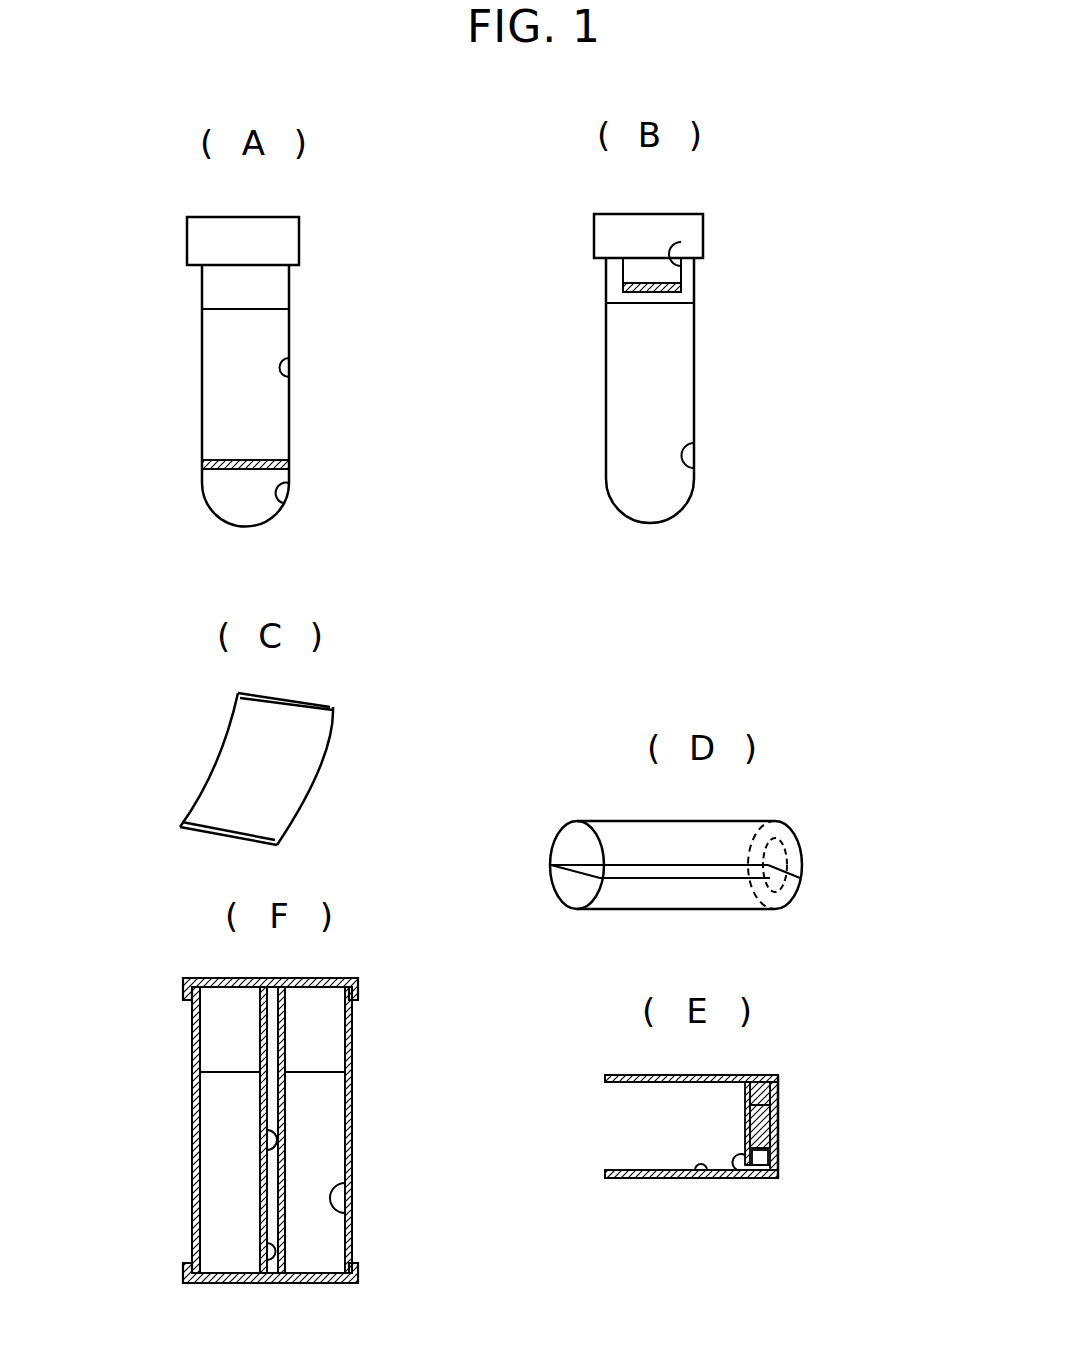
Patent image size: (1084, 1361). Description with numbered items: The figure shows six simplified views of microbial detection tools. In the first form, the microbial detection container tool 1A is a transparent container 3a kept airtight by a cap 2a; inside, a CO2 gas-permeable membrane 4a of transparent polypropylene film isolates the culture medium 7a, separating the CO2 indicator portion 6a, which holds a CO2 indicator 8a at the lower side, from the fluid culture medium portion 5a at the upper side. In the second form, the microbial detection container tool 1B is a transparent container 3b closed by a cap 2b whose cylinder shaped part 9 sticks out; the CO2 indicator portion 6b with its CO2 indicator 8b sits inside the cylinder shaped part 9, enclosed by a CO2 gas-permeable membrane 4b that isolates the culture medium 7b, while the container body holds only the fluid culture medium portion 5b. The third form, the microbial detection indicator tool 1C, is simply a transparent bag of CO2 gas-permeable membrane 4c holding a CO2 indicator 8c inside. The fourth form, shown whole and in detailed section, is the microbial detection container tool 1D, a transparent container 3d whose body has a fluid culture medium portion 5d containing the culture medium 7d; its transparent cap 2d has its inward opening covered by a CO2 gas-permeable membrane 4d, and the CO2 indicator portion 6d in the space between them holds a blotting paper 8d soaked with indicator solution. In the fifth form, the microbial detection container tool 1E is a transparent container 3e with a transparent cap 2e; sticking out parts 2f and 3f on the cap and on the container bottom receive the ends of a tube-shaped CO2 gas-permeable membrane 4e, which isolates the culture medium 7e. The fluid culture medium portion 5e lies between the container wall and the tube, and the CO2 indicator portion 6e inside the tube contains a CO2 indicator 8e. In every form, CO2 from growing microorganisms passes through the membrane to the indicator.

The microbial detection container tool 1A is at (306, 256).
The microbial detection container tool 1B is at (708, 212).
The microbial detection indicator tool 1C is at (340, 708).
The microbial detection container tool 1D is at (800, 815).
The microbial detection container tool 1E is at (364, 978).
The cap 2a is at (205, 228).
The cap 2b is at (603, 228).
The cap 2d is at (780, 1118).
The transparent cap 2e is at (210, 978).
The sticking out part 2f is at (265, 1000).
The transparent container 3a is at (290, 330).
The transparent container 3b is at (695, 352).
The transparent container 3d is at (625, 820).
The transparent container 3e is at (353, 1027).
The sticking out part 3f is at (265, 1250).
The CO2 gas-permeable membrane 4a is at (262, 465).
The CO2 gas-permeable membrane 4b is at (680, 288).
The CO2 gas-permeable membrane 4c is at (228, 732).
The CO2 gas-permeable membrane 4d is at (735, 1158).
The CO2 gas-permeable membrane tube 4e is at (290, 1157).
The fluid culture medium portion 5a is at (290, 360).
The fluid culture medium portion 5b is at (695, 462).
The fluid culture medium portion 5d is at (705, 1166).
The fluid culture medium portion 5e is at (346, 1190).
The CO2 indicator portion 6a is at (290, 488).
The CO2 indicator portion 6b is at (680, 243).
The CO2 indicator portion 6d is at (772, 1097).
The CO2 indicator portion 6e is at (258, 1135).
The culture medium 7a is at (215, 355).
The culture medium 7b is at (678, 410).
The culture medium 7d is at (738, 900).
The culture medium 7e is at (330, 1095).
The CO2 indicator 8a is at (218, 490).
The CO2 indicator 8b is at (633, 268).
The CO2 indicator 8c is at (298, 758).
The blotting paper 8d is at (790, 862).
The CO2 indicator 8e is at (270, 1085).
The cylinder shaped part 9 is at (610, 292).